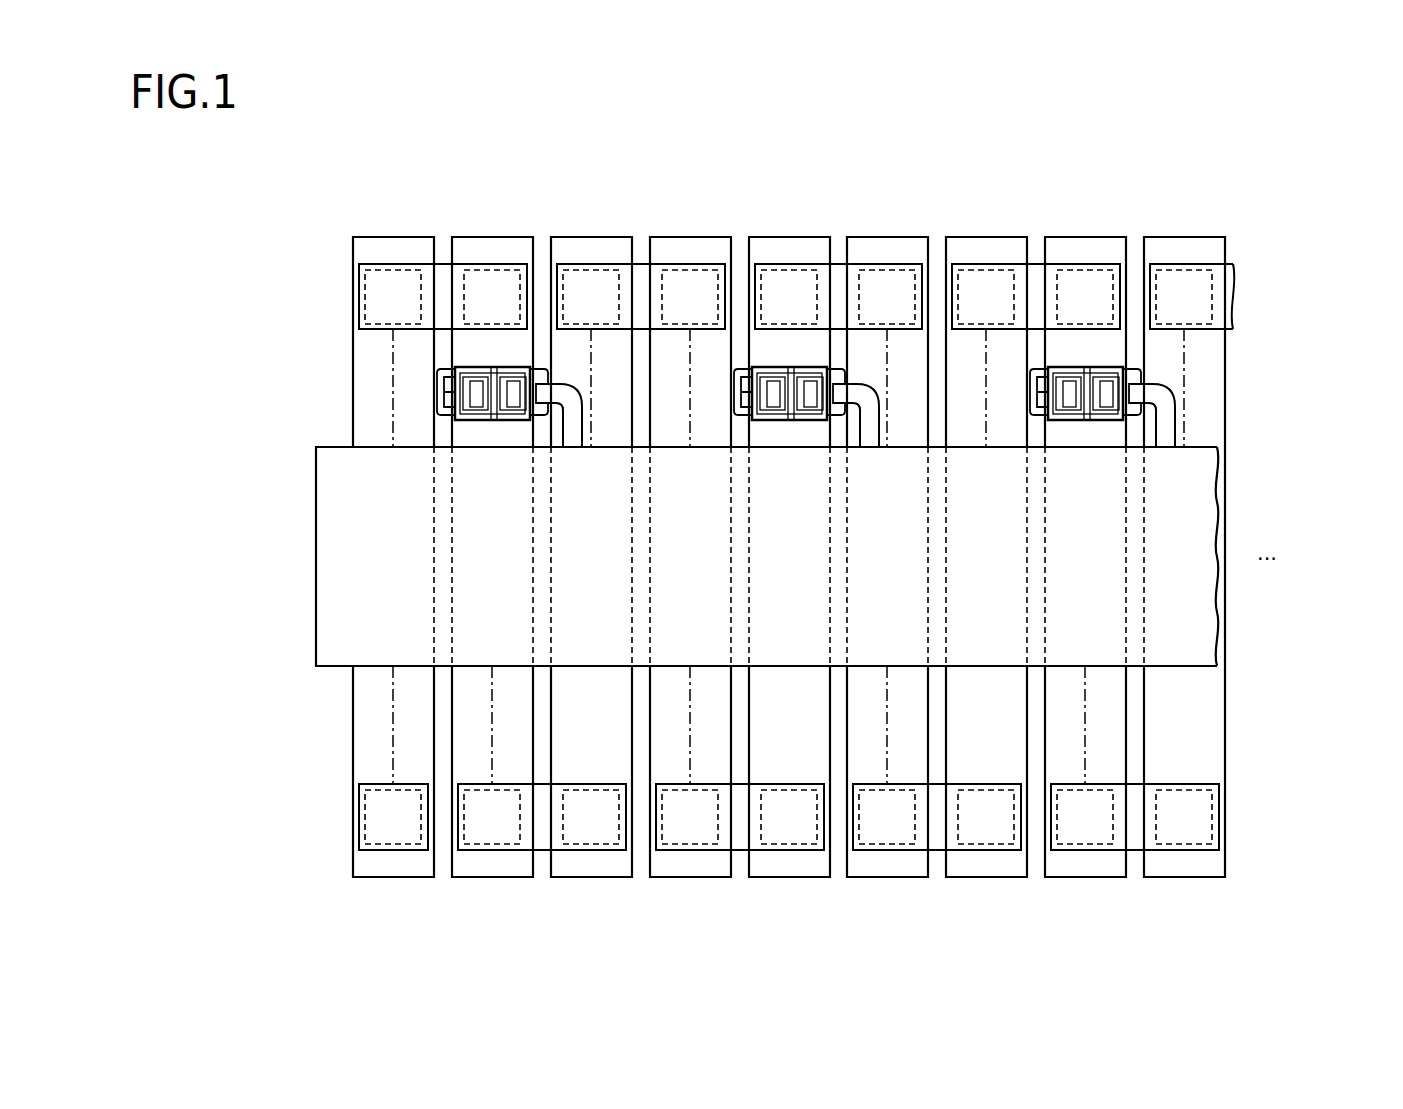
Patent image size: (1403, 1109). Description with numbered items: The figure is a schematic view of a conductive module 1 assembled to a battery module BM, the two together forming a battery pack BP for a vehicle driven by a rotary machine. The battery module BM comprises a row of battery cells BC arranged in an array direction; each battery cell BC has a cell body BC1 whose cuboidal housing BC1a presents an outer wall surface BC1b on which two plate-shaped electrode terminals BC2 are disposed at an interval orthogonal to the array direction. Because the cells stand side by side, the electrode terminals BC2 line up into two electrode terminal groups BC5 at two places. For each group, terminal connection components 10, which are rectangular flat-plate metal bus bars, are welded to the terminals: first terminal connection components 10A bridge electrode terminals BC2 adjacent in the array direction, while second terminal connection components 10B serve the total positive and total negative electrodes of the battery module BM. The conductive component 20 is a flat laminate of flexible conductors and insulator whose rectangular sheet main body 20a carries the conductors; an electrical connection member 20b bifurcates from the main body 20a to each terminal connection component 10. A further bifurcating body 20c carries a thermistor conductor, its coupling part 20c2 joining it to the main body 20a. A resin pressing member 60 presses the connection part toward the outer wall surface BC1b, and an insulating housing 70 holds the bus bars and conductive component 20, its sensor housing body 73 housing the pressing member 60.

The conductive module 1 is at (252, 383).
The battery pack BP is at (770, 530).
The battery module BM is at (342, 258).
The battery cell BC is at (390, 228).
The cell body BC1 is at (565, 237).
The housing BC1a is at (782, 614).
The outer wall surface BC1b is at (1164, 935).
The electrode terminal BC2 is at (1190, 270).
The electrode terminal group BC5 is at (340, 298).
The terminal connection component 10 is at (778, 491).
The first terminal connection component 10A is at (642, 263).
The second terminal connection component 10B is at (358, 833).
The conductive component 20 is at (267, 483).
The main body 20a is at (316, 530).
The electrical connection member 20b is at (392, 353).
The bifurcating body 20c is at (941, 258).
The coupling part 20c2 is at (557, 378).
The pressing member 60 is at (467, 387).
The housing 70 is at (790, 274).
The sensor housing body 73 is at (497, 367).